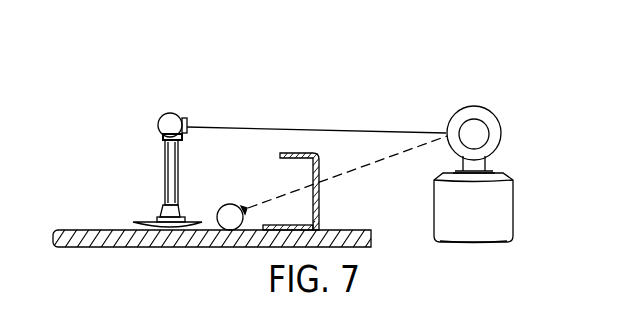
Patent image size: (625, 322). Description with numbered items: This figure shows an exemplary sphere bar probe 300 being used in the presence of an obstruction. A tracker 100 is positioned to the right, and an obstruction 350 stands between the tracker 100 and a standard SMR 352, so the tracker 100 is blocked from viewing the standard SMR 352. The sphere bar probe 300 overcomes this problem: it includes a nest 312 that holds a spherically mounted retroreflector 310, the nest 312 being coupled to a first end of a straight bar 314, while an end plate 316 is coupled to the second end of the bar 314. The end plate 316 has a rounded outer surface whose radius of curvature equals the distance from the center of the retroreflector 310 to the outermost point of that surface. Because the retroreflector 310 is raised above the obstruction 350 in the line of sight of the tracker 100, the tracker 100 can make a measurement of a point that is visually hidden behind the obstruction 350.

The tracker 100 is at (513, 212).
The sphere bar probe 300 is at (148, 84).
The spherically mounted retroreflector 310 is at (170, 120).
The nest 312 is at (164, 141).
The bar 314 is at (170, 183).
The end plate 316 is at (140, 223).
The obstruction 350 is at (319, 208).
The standard SMR 352 is at (227, 213).